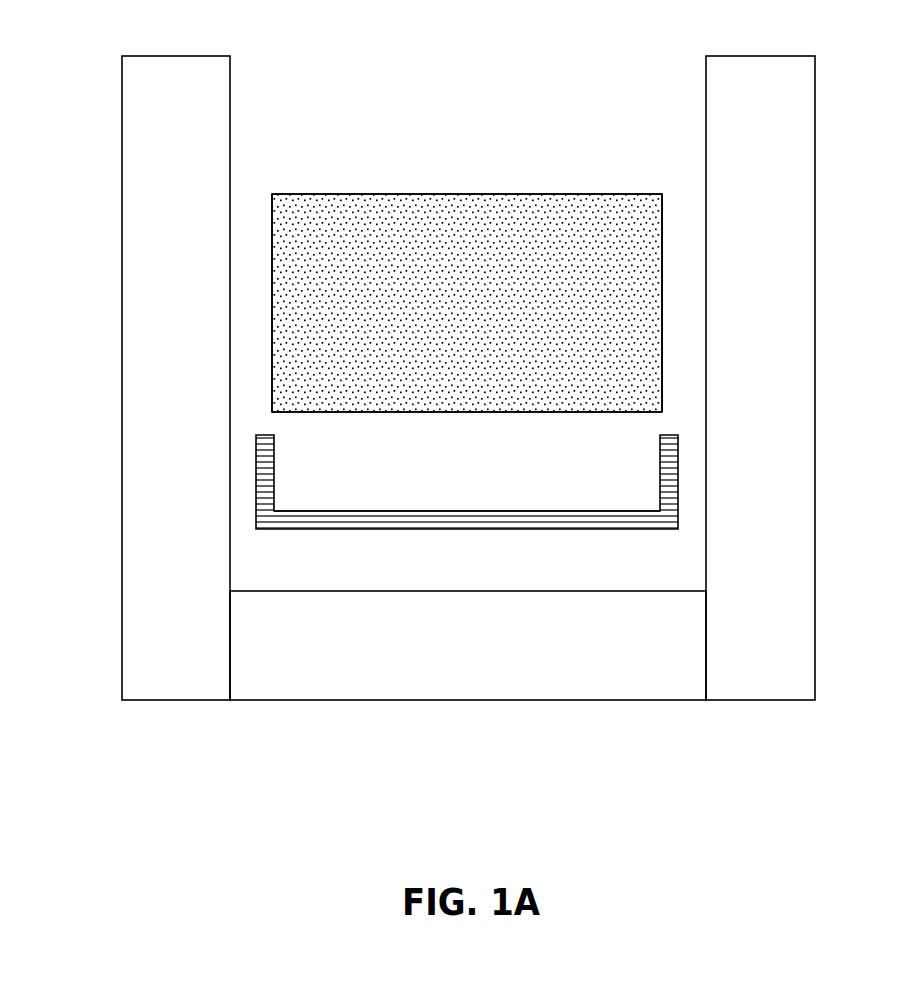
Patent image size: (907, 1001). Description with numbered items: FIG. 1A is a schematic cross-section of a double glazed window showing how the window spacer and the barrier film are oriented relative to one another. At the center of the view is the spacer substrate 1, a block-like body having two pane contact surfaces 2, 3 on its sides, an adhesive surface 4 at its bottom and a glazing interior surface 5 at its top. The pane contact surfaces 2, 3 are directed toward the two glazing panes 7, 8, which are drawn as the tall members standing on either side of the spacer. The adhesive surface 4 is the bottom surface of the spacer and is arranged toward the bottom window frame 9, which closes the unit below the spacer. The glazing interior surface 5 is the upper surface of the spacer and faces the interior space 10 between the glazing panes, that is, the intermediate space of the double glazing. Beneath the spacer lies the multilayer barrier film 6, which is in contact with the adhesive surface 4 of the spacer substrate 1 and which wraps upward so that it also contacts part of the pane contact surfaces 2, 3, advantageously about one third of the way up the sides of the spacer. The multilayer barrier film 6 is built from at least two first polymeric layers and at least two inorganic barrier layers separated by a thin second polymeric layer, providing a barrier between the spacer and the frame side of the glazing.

The spacer substrate 1 is at (536, 199).
The pane contact surface 2 is at (262, 258).
The pane contact surface 3 is at (672, 266).
The adhesive surface 4 is at (383, 413).
The glazing interior surface 5 is at (405, 194).
The multilayer barrier film 6 is at (392, 524).
The glazing pane 7 is at (122, 330).
The glazing pane 8 is at (815, 285).
The bottom window frame 9 is at (340, 702).
The interior space 10 is at (465, 82).